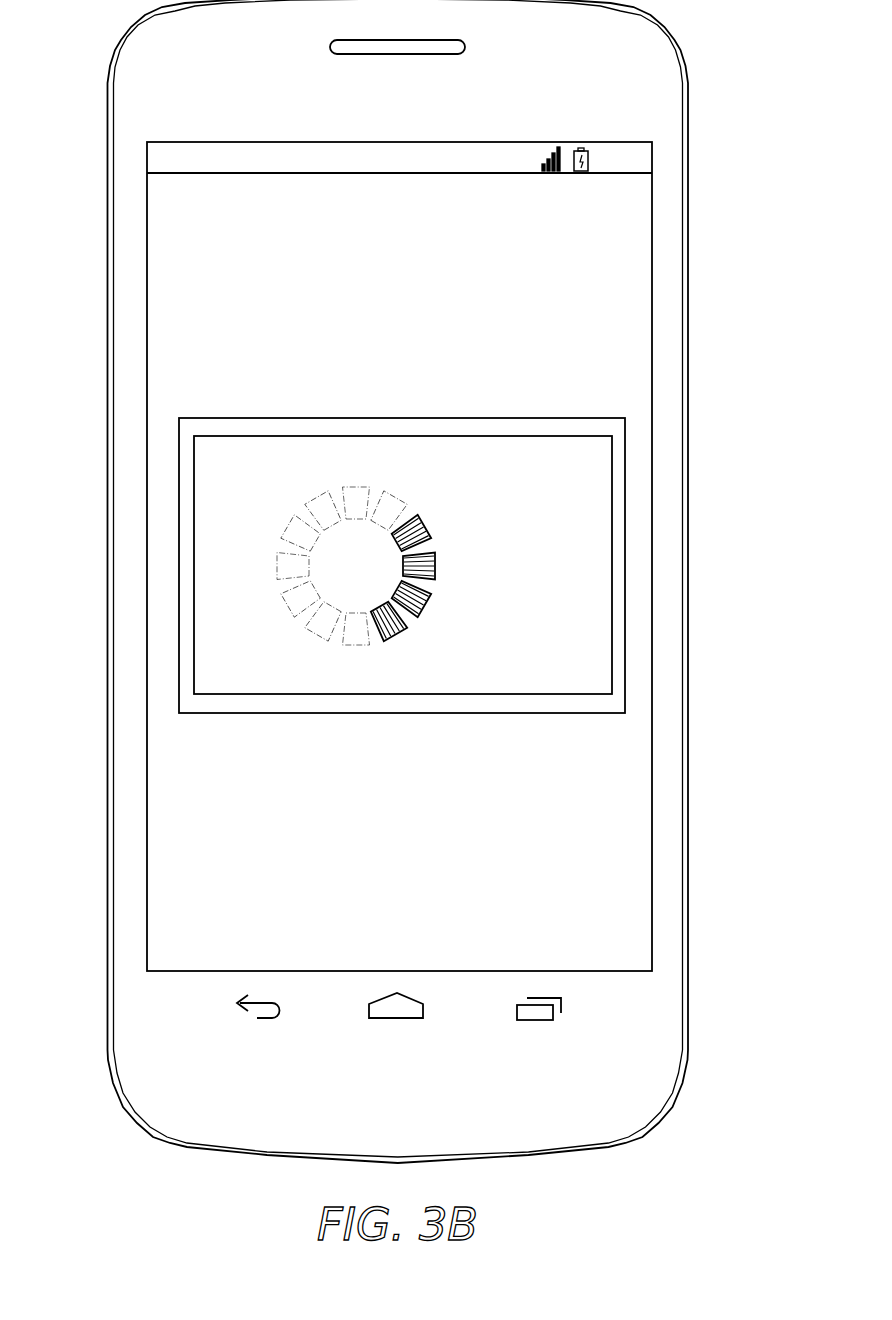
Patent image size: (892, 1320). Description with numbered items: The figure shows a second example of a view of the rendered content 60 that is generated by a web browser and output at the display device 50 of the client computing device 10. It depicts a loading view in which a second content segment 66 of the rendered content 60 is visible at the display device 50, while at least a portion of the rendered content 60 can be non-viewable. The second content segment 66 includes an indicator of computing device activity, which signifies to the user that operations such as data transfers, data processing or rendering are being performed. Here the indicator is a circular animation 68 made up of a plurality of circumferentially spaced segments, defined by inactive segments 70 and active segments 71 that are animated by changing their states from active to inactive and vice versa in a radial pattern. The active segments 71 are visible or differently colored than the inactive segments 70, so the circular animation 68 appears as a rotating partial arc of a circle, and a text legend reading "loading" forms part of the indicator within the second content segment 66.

The client computing device 10 is at (704, 52).
The display device 50 is at (523, 141).
The rendered content 60 is at (147, 429).
The second content segment 66 is at (222, 405).
The circular animation 68 is at (383, 577).
The inactive segments 70 is at (356, 653).
The active segments 71 is at (431, 534).